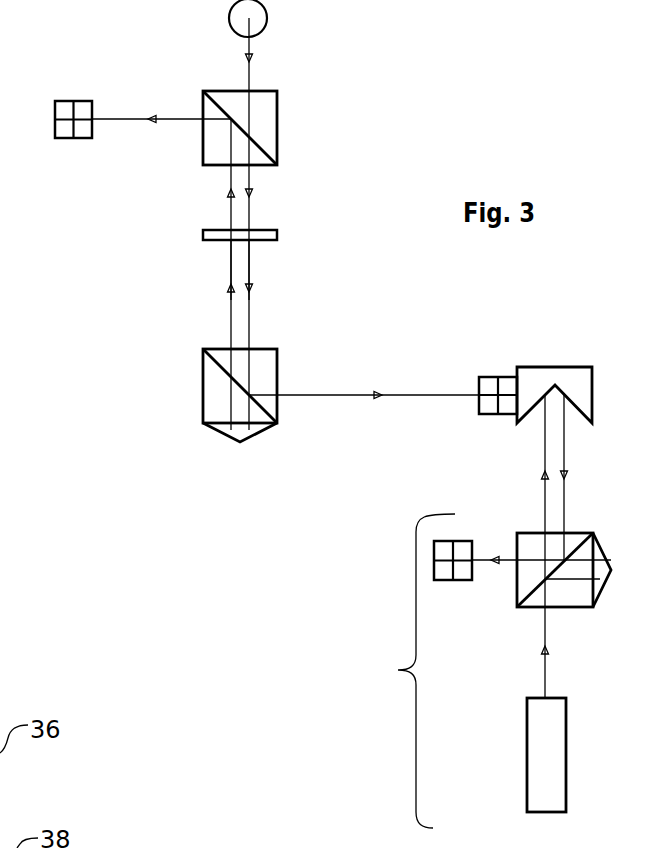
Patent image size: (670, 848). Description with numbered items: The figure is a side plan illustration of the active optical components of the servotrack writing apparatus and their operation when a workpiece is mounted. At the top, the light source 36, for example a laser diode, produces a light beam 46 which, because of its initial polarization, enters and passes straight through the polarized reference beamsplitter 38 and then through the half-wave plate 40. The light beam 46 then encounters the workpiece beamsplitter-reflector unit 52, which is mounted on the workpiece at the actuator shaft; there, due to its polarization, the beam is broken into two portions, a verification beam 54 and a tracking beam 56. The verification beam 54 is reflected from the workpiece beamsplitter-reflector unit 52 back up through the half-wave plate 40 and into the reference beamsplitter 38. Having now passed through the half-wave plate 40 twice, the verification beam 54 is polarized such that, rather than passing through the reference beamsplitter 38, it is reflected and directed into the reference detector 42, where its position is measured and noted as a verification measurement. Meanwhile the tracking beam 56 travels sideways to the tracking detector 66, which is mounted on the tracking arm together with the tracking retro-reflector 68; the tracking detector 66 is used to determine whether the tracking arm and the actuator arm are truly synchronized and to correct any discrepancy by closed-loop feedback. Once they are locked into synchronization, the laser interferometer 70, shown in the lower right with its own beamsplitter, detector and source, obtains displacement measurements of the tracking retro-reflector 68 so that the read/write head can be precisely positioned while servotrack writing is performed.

The light source 36 is at (268, 18).
The polarized reference beamsplitter 38 is at (278, 128).
The half-wave plate 40 is at (200, 236).
The reference detector 42 is at (60, 140).
The light beam 46 is at (255, 305).
The verification beam 54 is at (230, 262).
The workpiece beamsplitter-reflector unit 52 is at (203, 388).
The tracking beam 56 is at (407, 397).
The tracking detector 66 is at (497, 378).
The tracking retro-reflector 68 is at (555, 367).
The laser interferometer 70 is at (388, 671).